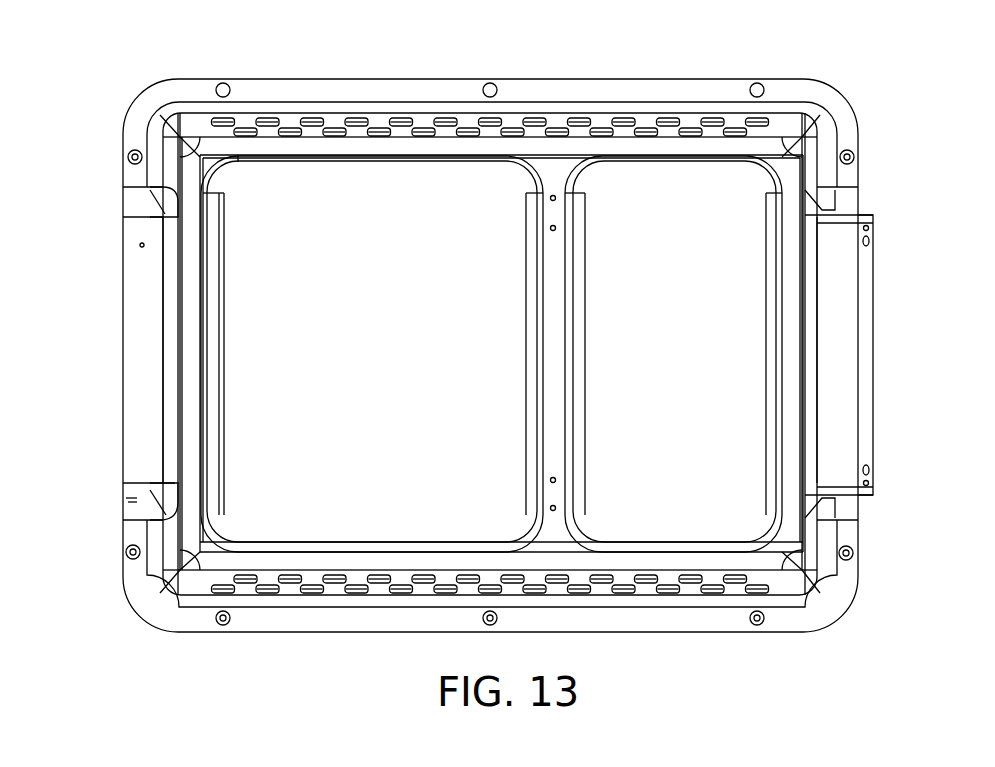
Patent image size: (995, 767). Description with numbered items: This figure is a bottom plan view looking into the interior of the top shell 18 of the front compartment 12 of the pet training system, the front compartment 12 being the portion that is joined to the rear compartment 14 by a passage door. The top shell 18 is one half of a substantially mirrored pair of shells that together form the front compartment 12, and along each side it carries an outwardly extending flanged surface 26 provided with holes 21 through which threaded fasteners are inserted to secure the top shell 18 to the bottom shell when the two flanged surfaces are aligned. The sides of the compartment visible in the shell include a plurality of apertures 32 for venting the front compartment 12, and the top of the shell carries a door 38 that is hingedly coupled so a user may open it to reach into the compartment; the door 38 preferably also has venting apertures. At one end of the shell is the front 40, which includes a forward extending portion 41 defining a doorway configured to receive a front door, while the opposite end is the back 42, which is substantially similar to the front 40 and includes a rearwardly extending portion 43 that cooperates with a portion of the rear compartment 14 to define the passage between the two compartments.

The front compartment 12 is at (520, 33).
The rear compartment 14 is at (110, 348).
The top shell 18 is at (349, 77).
The holes 21 is at (228, 622).
The flanged surfaces 26 is at (618, 105).
The apertures 32 is at (692, 128).
The door 38 is at (290, 190).
The front 40 is at (95, 202).
The forward extending portion 41 is at (140, 431).
The back 42 is at (893, 540).
The rearwardly extending portion 43 is at (853, 426).